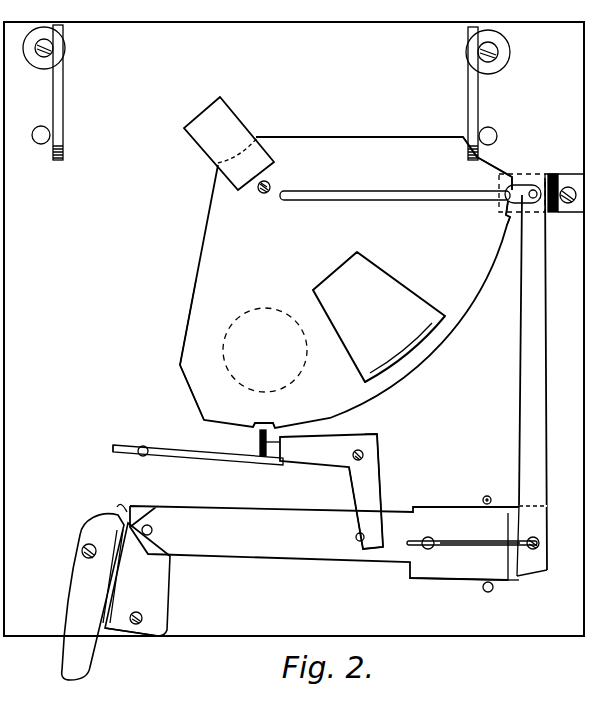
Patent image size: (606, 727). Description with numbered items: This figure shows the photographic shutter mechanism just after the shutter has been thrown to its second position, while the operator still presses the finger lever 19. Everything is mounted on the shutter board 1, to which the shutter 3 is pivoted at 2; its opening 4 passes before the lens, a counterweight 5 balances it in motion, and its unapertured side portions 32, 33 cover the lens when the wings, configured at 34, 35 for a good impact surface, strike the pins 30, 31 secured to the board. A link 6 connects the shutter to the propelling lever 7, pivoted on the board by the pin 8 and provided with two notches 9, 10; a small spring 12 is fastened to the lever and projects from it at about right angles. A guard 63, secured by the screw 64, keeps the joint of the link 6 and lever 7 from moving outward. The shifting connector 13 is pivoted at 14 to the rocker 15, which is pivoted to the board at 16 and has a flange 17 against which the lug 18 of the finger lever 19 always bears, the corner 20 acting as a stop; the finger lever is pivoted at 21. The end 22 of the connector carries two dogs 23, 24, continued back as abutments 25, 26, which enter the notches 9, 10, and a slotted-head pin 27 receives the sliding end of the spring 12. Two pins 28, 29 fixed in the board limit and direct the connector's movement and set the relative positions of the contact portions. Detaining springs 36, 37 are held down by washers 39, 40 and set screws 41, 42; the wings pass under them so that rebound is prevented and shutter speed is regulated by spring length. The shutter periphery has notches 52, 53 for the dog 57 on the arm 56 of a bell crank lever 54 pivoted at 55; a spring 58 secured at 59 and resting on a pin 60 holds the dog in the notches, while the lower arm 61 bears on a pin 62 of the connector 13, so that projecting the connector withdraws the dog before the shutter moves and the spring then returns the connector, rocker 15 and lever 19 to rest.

The shutter board 1 is at (317, 282).
The pivot 2 is at (269, 185).
The shutter 3 is at (265, 350).
The opening 4 is at (415, 298).
The counterweight 5 is at (229, 143).
The link 6 is at (412, 189).
The propelling lever 7 is at (533, 374).
The pin 8 is at (540, 543).
The notch 9 is at (523, 543).
The notch 10 is at (520, 578).
The spring 12 is at (478, 546).
The shifting connector 13 is at (324, 543).
The pivot 14 is at (153, 530).
The rocker 15 is at (137, 579).
The pivot 16 is at (142, 618).
The flange 17 is at (117, 592).
The lug 18 is at (118, 499).
The finger lever 19 is at (93, 597).
The corner 20 is at (106, 633).
The pivot 21 is at (90, 558).
The end 22 is at (472, 531).
The dog 23 is at (500, 498).
The dog 24 is at (509, 583).
The abutment 25 is at (466, 495).
The abutment 26 is at (448, 580).
The pin 27 is at (430, 549).
The pin 28 is at (493, 488).
The pin 29 is at (488, 592).
The pin 30 is at (41, 141).
The pin 31 is at (497, 135).
The unapertured side portion 32 is at (197, 398).
The unapertured side portion 33 is at (489, 168).
The wing configuration 34 is at (196, 395).
The wing configuration 35 is at (503, 169).
The spring 36 is at (63, 114).
The spring 37 is at (474, 113).
The washer 39 is at (42, 56).
The washer 40 is at (501, 66).
The set screw 41 is at (58, 50).
The set screw 42 is at (498, 52).
The notch 52 is at (506, 230).
The notch 53 is at (268, 424).
The bell crank lever 54 is at (372, 441).
The pivot 55 is at (364, 456).
The arm 56 is at (331, 491).
The dog 57 is at (271, 439).
The spring 58 is at (198, 461).
The securing point 59 is at (124, 446).
The pin 60 is at (144, 457).
The lower arm 61 is at (366, 491).
The pin 62 is at (357, 540).
The guard 63 is at (553, 175).
The screw 64 is at (571, 205).